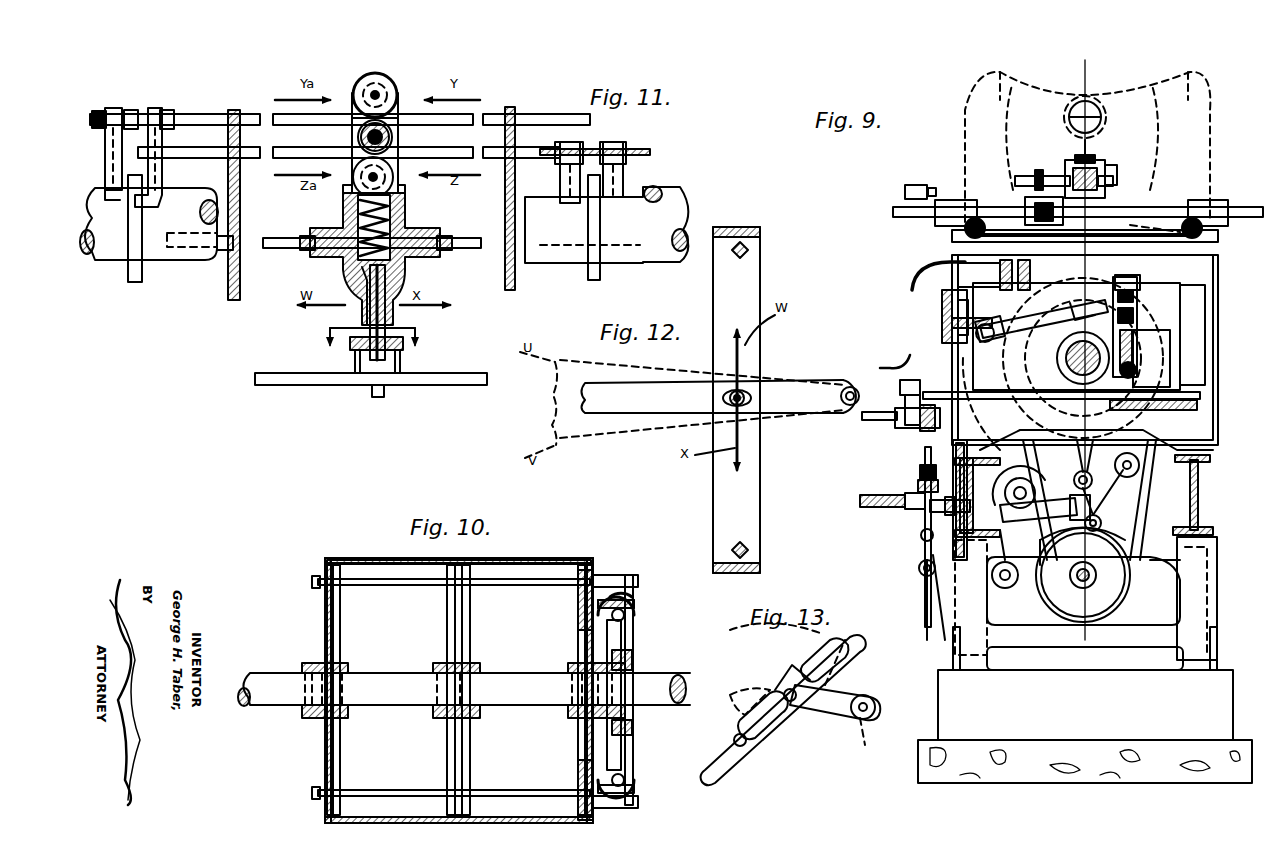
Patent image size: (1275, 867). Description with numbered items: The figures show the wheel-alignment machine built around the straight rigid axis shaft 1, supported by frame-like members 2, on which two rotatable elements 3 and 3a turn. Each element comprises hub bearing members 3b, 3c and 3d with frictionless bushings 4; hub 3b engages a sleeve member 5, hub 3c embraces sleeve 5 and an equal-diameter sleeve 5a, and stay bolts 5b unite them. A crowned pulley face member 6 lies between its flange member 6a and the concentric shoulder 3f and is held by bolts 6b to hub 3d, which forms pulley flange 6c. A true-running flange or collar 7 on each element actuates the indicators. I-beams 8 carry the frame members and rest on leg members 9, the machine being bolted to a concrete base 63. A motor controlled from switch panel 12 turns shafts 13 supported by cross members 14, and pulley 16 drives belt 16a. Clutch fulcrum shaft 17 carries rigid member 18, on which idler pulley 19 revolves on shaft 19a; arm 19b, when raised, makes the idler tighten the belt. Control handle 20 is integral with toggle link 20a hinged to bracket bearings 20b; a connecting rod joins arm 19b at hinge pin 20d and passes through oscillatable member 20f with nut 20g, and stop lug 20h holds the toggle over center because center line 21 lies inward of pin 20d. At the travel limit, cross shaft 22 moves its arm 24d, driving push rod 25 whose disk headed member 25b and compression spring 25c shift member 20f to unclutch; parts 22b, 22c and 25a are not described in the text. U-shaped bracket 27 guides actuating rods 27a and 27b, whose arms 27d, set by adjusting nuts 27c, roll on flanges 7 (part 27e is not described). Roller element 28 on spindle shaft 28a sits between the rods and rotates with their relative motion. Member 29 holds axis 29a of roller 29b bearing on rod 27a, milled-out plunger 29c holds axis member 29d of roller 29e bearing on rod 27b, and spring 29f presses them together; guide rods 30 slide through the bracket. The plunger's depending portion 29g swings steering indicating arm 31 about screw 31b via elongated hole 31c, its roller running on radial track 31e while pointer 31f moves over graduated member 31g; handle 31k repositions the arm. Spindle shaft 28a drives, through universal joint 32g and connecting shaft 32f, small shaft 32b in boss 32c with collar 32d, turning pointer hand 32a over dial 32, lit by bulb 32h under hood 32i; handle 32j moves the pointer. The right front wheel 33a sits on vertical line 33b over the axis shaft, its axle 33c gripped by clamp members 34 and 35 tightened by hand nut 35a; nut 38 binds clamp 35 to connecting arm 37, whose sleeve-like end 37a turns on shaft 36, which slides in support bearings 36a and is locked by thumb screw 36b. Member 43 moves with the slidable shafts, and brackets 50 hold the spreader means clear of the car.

In FIG. 11, the axis shaft 1 is at (165, 205).
In FIG. 10, the axis shaft 1 is at (650, 680).
In FIG. 9, the axis shaft 1 is at (1065, 355).
In FIG. 9, the frame-like members 2 is at (1200, 381).
In FIG. 10, the rotatable element 3 is at (650, 695).
In FIG. 9, the rotatable element 3a is at (1085, 340).
In FIG. 10, the hub bearing member 3b is at (305, 663).
In FIG. 10, the hub bearing member 3c is at (472, 663).
In FIG. 10, the hub bearing member 3d is at (570, 663).
In FIG. 10, the shoulder 3f is at (635, 600).
In FIG. 10, the bearing bushings 4 is at (348, 668).
In FIG. 10, the sleeve member 5 is at (358, 558).
In FIG. 10, the sleeve 5a is at (505, 558).
In FIG. 10, the stay bolts 5b is at (483, 585).
In FIG. 10, the pulley face member 6 is at (605, 580).
In FIG. 10, the flange member 6a is at (635, 583).
In FIG. 10, the bolts 6b is at (625, 613).
In FIG. 10, the pulley flange 6c is at (590, 575).
In FIG. 11, the flange or collar 7 is at (142, 270).
In FIG. 10, the flange or collar 7 is at (633, 652).
In FIG. 9, the I-beams 8 is at (968, 465).
In FIG. 9, the leg members 9 is at (1195, 592).
In FIG. 11, the switch panel 12 is at (370, 344).
In FIG. 9, the shafts 13 is at (1108, 590).
In FIG. 9, the cross members 14 is at (1190, 565).
In FIG. 9, the pulley 16 is at (1083, 612).
In FIG. 9, the belt 16a is at (1145, 545).
In FIG. 9, the clutch fulcrum shaft 17 is at (1006, 588).
In FIG. 9, the rigid member 18 is at (1070, 575).
In FIG. 9, the idler pulley 19 is at (1074, 464).
In FIG. 9, the shaft 19a is at (1051, 500).
In FIG. 9, the arm 19b is at (931, 604).
In FIG. 9, the control handle 20 is at (900, 500).
In FIG. 9, the toggle link 20a is at (930, 520).
In FIG. 9, the bracket bearings 20b is at (971, 597).
In FIG. 9, the hinge pin 20d is at (920, 492).
In FIG. 9, the oscillatable member 20f is at (920, 468).
In FIG. 9, the nut 20g is at (918, 482).
In FIG. 9, the stop lug 20h is at (928, 460).
In FIG. 9, the center line 21 is at (922, 605).
In FIG. 9, the cross shaft 22 is at (1102, 501).
In FIG. 9, the pulley 22b is at (1150, 500).
In FIG. 9, the link 22c is at (1116, 495).
In FIG. 9, the arm 24d is at (1111, 525).
In FIG. 9, the push rod 25 is at (1045, 515).
In FIG. 9, the arc 25a is at (1082, 542).
In FIG. 9, the disk headed member 25b is at (987, 494).
In FIG. 9, the compression spring 25c is at (1019, 487).
In FIG. 11, the U-shaped bracket 27 is at (227, 236).
In FIG. 12, the U-shaped bracket 27 is at (748, 258).
In FIG. 11, the actuating rod 27a is at (200, 115).
In FIG. 9, the actuating rod 27a is at (1142, 285).
In FIG. 11, the actuating rod 27b is at (198, 157).
In FIG. 9, the actuating rod 27b is at (1140, 318).
In FIG. 11, the adjusting nuts 27c is at (152, 108).
In FIG. 11, the arms 27d is at (110, 148).
In FIG. 11, the clamp bolt 27e is at (535, 114).
In FIG. 11, the roller element 28 is at (392, 137).
In FIG. 9, the roller element 28 is at (1140, 298).
In FIG. 11, the spindle shaft 28a is at (390, 125).
In FIG. 11, the member 29 is at (420, 260).
In FIG. 9, the member 29 is at (1140, 348).
In FIG. 11, the axis 29a is at (380, 88).
In FIG. 11, the frictionless roller 29b is at (395, 100).
In FIG. 11, the milled out plunger 29c is at (402, 183).
In FIG. 11, the axis member 29d is at (392, 172).
In FIG. 11, the frictionless roller 29e is at (372, 75).
In FIG. 11, the compression spring 29f is at (410, 276).
In FIG. 11, the depending portion 29g is at (395, 310).
In FIG. 12, the depending portion 29g is at (745, 388).
In FIG. 11, the guide rods 30 is at (288, 248).
In FIG. 9, the guide rods 30 is at (1175, 362).
In FIG. 11, the steering indicating arm 31 is at (365, 360).
In FIG. 12, the steering indicating arm 31 is at (680, 383).
In FIG. 9, the steering indicating arm 31 is at (1075, 398).
In FIG. 12, the screw 31b is at (848, 385).
In FIG. 9, the screw 31b is at (1195, 395).
In FIG. 12, the elongated hole 31c is at (752, 398).
In FIG. 9, the radial track 31e is at (915, 425).
In FIG. 9, the pointer 31f is at (905, 400).
In FIG. 9, the graduated member 31g is at (900, 385).
In FIG. 9, the handle 31k is at (880, 422).
In FIG. 9, the wheel alignment indicator dial 32 is at (940, 296).
In FIG. 9, the pointer hand 32a is at (952, 305).
In FIG. 9, the small shaft 32b is at (955, 322).
In FIG. 9, the boss 32c is at (1002, 335).
In FIG. 9, the collar 32d is at (930, 270).
In FIG. 9, the universal connecting shaft 32f is at (1030, 318).
In FIG. 9, the universal joint connection 32g is at (1137, 265).
In FIG. 9, the electric light bulb 32h is at (999, 265).
In FIG. 9, the shade or hood 32i is at (958, 262).
In FIG. 9, the handle 32j is at (950, 338).
In FIG. 9, the right front wheel 33a is at (962, 112).
In FIG. 9, the vertical line 33b is at (1088, 72).
In FIG. 9, the front axle 33c is at (1092, 160).
In FIG. 9, the clamp member 34 is at (1125, 172).
In FIG. 9, the clamp member 35 is at (1065, 168).
In FIG. 9, the hand nut 35a is at (1030, 178).
In FIG. 9, the shaft 36 is at (1252, 207).
In FIG. 13, the shaft 36 is at (852, 640).
In FIG. 9, the support bearings 36a is at (965, 205).
In FIG. 13, the support bearings 36a is at (848, 657).
In FIG. 9, the thumb screw 36b is at (915, 185).
In FIG. 13, the connecting arm 37 is at (858, 728).
In FIG. 13, the sleeve-like end 37a is at (790, 685).
In FIG. 9, the nut 38 is at (1028, 208).
In FIG. 9, the member 43 is at (1122, 235).
In FIG. 13, the member 43 is at (755, 690).
In FIG. 9, the brackets 50 is at (905, 355).
In FIG. 9, the concrete island or base 63 is at (940, 682).